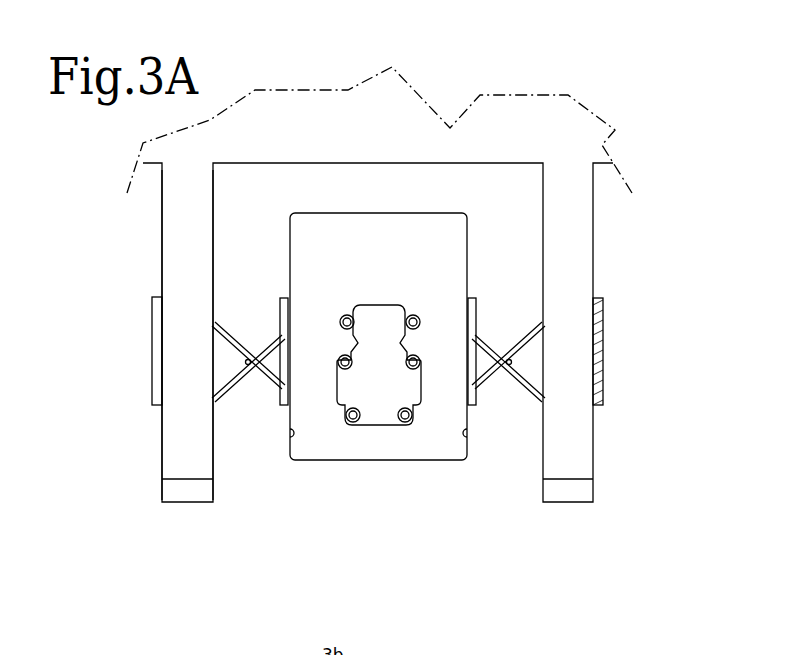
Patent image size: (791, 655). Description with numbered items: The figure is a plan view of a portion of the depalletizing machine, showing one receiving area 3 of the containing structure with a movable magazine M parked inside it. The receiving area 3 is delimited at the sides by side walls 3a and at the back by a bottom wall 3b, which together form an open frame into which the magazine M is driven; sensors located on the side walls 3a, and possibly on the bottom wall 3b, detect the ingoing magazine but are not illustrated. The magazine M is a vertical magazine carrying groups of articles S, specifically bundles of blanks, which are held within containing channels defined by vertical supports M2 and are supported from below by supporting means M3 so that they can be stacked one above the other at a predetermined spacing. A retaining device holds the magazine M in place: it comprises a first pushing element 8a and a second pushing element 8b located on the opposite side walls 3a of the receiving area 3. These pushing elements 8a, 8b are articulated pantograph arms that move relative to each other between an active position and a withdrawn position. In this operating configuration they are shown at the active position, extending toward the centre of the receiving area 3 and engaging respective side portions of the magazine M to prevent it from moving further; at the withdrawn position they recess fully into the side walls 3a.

The receiving area 3 is at (505, 488).
The side wall 3a is at (213, 215).
The bottom wall 3b is at (362, 163).
The first pushing element 8a is at (235, 347).
The second pushing element 8b is at (483, 343).
The movable magazine M is at (343, 462).
The groups of articles S is at (383, 304).
The vertical supports M2 is at (419, 313).
The supporting means M3 is at (347, 313).